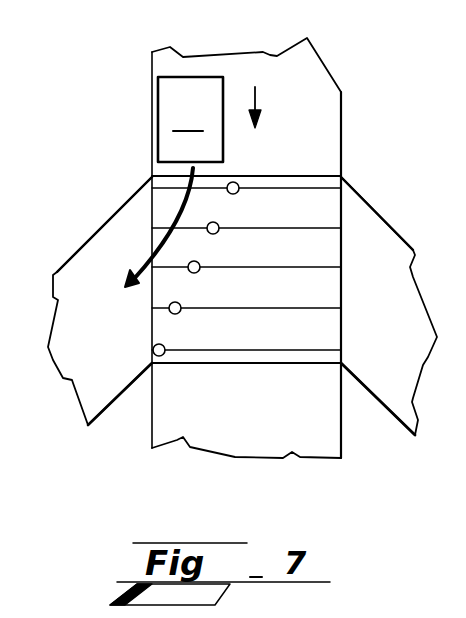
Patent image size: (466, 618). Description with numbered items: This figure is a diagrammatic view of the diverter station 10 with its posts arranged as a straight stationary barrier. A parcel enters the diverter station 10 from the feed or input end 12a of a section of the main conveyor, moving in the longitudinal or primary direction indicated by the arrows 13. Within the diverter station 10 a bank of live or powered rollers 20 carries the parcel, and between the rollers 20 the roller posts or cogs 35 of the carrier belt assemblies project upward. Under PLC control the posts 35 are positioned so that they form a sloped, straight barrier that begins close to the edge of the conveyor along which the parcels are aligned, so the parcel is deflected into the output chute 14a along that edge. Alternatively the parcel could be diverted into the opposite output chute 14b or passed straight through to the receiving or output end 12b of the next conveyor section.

The diverter station 10 is at (278, 384).
The feed or input end 12a is at (323, 125).
The receiving or output end 12b is at (158, 412).
The arrows 13 is at (263, 92).
The output chute 14a is at (403, 345).
The output chute 14b is at (115, 342).
The live or powered rollers 20 is at (322, 212).
The roller posts or cogs 35 is at (217, 233).